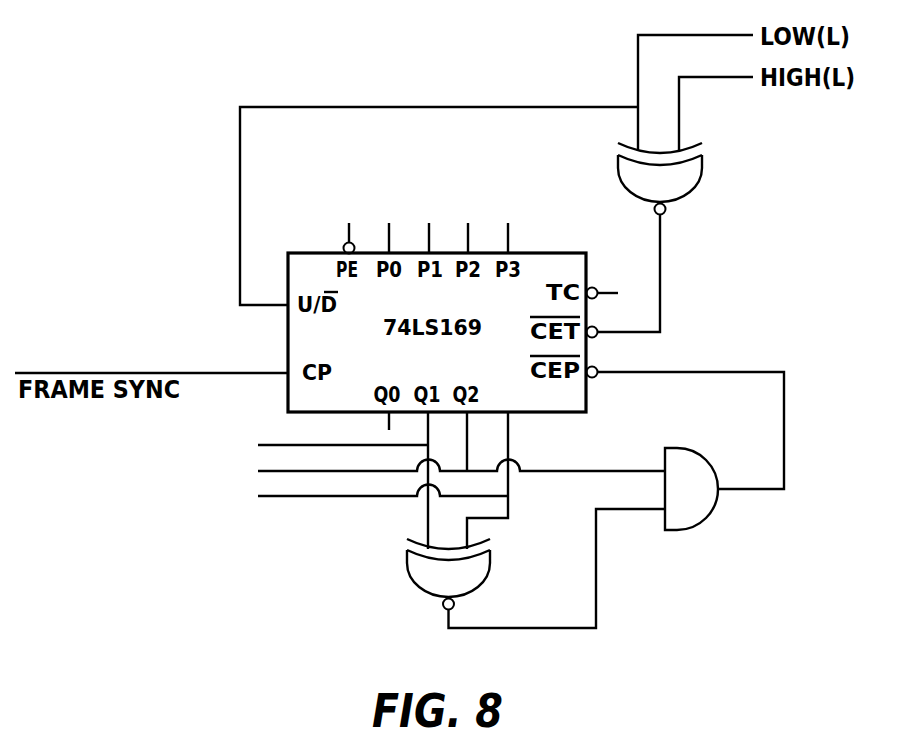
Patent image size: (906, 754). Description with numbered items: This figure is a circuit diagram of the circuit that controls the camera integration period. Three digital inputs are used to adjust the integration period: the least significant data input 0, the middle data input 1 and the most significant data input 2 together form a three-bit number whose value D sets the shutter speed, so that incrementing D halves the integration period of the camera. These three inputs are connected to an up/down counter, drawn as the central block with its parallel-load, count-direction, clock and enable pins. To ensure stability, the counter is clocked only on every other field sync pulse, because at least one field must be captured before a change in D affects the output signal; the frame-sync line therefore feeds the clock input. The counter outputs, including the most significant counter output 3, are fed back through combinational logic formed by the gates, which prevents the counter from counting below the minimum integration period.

The digital input D0 0 is at (323, 445).
The digital input D1 1 is at (441, 470).
The digital input D2 2 is at (363, 495).
The Q3 counter output line 3 is at (493, 465).